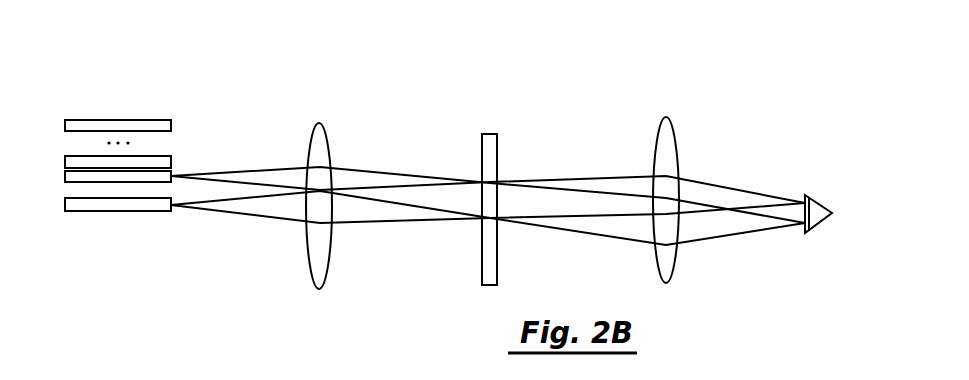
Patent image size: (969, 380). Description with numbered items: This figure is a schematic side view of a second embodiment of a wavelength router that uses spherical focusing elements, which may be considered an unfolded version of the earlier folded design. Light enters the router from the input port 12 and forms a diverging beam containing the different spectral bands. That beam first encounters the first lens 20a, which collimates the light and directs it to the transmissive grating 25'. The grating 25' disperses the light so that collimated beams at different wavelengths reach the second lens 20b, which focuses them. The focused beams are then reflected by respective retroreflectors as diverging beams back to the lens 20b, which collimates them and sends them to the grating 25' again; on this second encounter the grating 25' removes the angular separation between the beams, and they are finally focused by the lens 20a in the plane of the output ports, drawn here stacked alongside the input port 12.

The input port 12 is at (172, 211).
The first lens 20a is at (332, 158).
The second lens 20b is at (673, 127).
The transmissive grating 25' is at (519, 187).